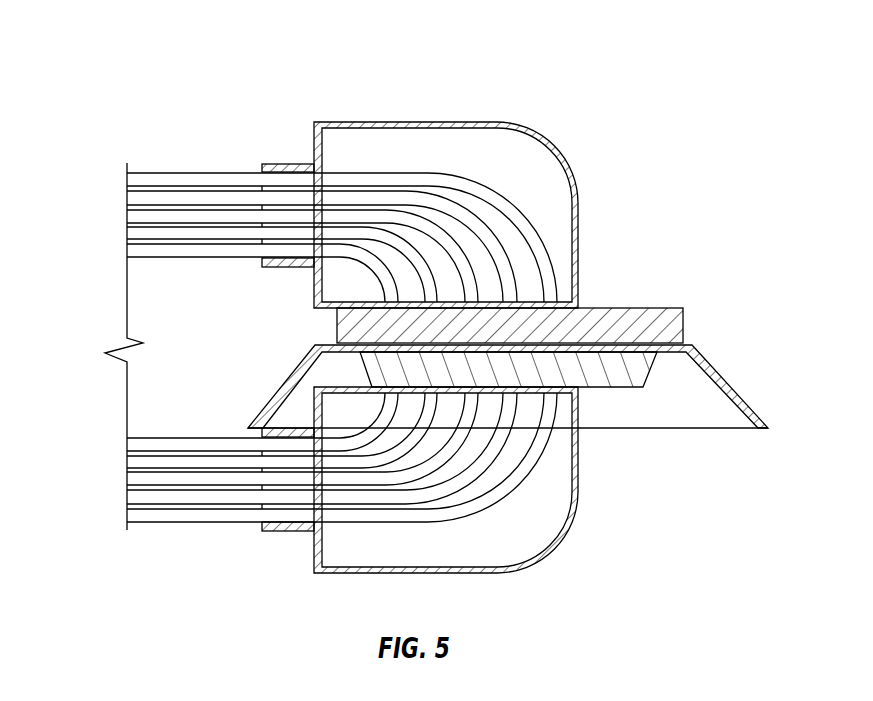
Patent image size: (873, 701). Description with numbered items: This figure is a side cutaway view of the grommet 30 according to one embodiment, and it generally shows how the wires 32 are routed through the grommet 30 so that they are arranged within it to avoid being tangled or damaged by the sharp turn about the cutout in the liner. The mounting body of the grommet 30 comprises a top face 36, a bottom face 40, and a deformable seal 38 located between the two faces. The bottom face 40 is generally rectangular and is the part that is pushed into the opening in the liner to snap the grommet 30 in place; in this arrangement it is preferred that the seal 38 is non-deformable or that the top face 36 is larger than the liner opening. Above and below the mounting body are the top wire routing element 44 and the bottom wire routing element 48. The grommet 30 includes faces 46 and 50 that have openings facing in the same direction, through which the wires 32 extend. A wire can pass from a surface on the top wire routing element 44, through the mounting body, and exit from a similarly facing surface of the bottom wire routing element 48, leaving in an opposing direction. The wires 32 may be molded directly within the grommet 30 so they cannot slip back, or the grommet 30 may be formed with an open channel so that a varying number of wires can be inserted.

The grommet 30 is at (603, 54).
The wires 32 is at (138, 480).
The top face 36 is at (347, 328).
The deformable seal 38 is at (738, 388).
The bottom face 40 is at (628, 387).
The top wire routing element 44 is at (580, 223).
The face 46 is at (313, 148).
The bottom wire routing element 48 is at (547, 550).
The face 50 is at (313, 550).